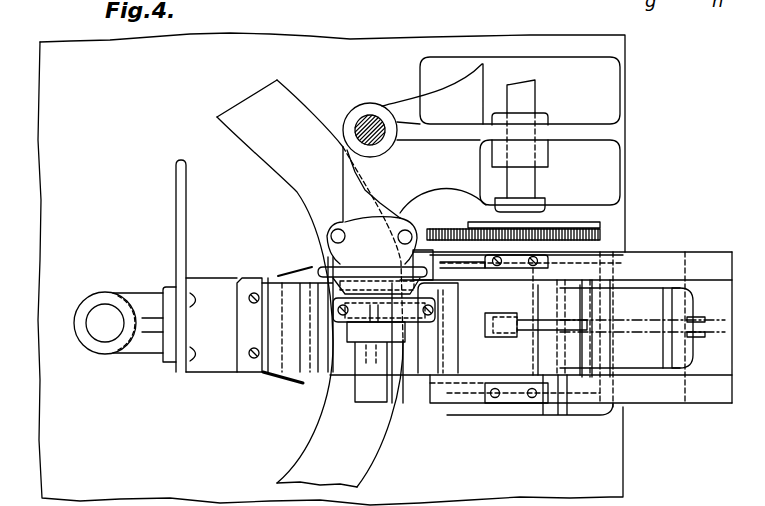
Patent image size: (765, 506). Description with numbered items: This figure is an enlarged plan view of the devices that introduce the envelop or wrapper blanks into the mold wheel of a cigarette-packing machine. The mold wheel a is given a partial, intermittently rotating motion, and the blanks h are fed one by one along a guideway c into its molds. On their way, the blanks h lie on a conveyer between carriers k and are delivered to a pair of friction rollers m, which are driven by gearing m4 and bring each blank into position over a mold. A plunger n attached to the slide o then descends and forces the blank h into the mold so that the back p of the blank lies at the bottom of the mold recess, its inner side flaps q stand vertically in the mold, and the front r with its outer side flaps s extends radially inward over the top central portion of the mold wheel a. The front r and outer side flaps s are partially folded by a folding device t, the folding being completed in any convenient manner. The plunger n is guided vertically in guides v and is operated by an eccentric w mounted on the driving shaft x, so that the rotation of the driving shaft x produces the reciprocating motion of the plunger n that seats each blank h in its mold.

The mold wheel a is at (310, 283).
The gear m4 is at (445, 230).
The guides v is at (343, 337).
The outer side flaps s is at (287, 278).
The plunger n is at (303, 272).
The inner side flaps q is at (352, 275).
The slide o is at (370, 289).
The guideway c is at (446, 327).
The eccentric w is at (420, 318).
The friction rollers m is at (440, 353).
The carriers k is at (700, 318).
The folding device t is at (277, 383).
The front r is at (313, 360).
The driving shaft x is at (372, 402).
The back p is at (403, 383).
The envelop or wrapper blank h is at (630, 362).